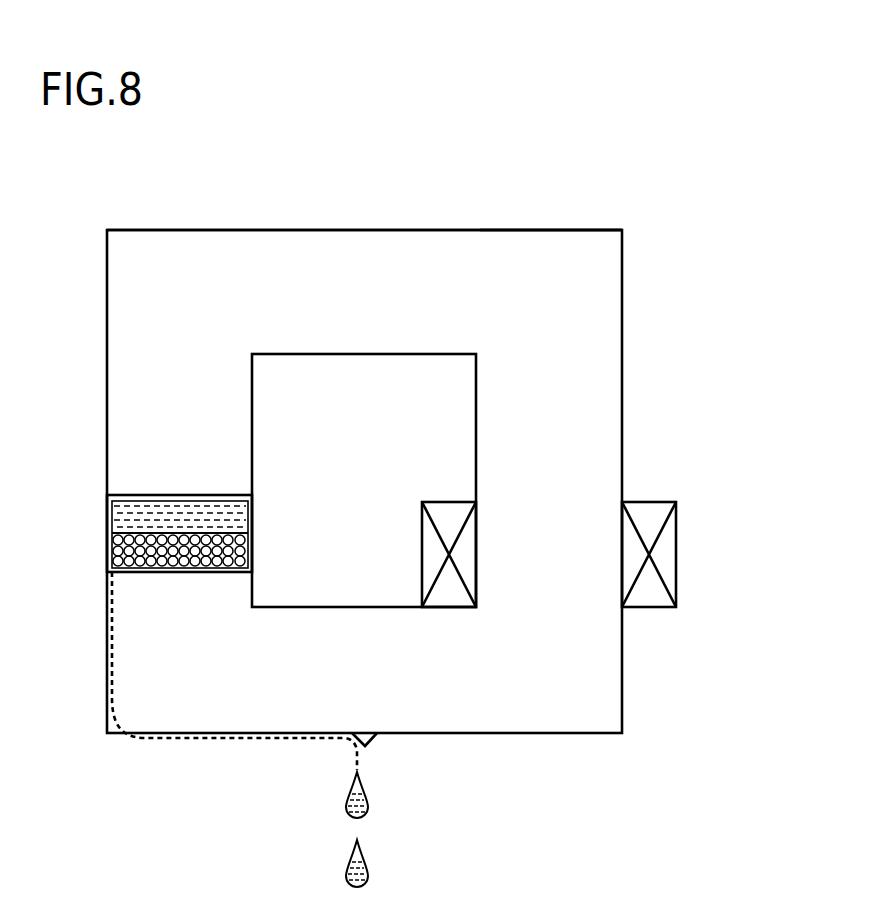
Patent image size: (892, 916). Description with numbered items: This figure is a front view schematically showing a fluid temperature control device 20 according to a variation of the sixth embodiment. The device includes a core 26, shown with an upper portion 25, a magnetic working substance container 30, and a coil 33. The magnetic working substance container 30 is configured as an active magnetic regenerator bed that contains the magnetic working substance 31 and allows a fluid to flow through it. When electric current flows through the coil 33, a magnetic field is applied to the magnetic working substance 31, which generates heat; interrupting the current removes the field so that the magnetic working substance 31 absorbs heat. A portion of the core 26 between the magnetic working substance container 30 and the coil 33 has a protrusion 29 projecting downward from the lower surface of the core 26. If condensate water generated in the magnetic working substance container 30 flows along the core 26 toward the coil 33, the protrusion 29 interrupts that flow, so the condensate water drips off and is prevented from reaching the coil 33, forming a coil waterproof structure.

The fluid temperature control device 20 is at (222, 207).
The top panel 25 is at (459, 229).
The core 26 is at (559, 230).
The protrusion 29 is at (370, 743).
The magnetic working substance container 30 is at (166, 542).
The magnetic working substance 31 is at (228, 551).
The coil 33 is at (677, 552).